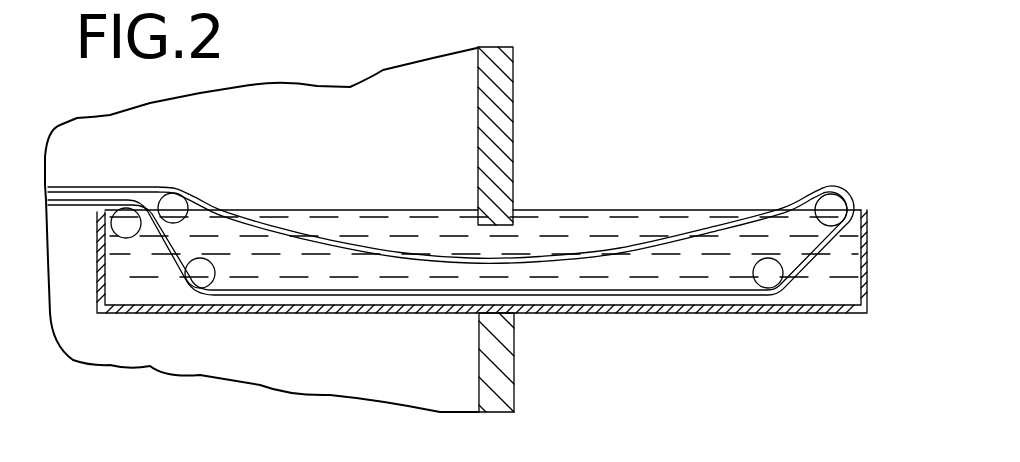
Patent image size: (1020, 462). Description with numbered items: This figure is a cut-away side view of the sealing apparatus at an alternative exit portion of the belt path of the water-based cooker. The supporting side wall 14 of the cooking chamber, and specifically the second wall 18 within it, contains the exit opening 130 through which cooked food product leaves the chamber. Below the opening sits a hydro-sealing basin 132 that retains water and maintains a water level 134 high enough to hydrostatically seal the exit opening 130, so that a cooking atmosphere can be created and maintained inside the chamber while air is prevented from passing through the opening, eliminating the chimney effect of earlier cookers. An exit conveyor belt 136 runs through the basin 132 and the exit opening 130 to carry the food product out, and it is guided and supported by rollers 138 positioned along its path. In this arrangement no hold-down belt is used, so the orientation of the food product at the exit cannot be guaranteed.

The supporting side wall 14 is at (516, 97).
The second wall 18 is at (515, 145).
The exit opening 130 is at (452, 251).
The hydro-sealing basin 132 is at (802, 313).
The water level 134 is at (660, 206).
The exit conveyor belt 136 is at (783, 212).
The rollers 138 is at (175, 206).